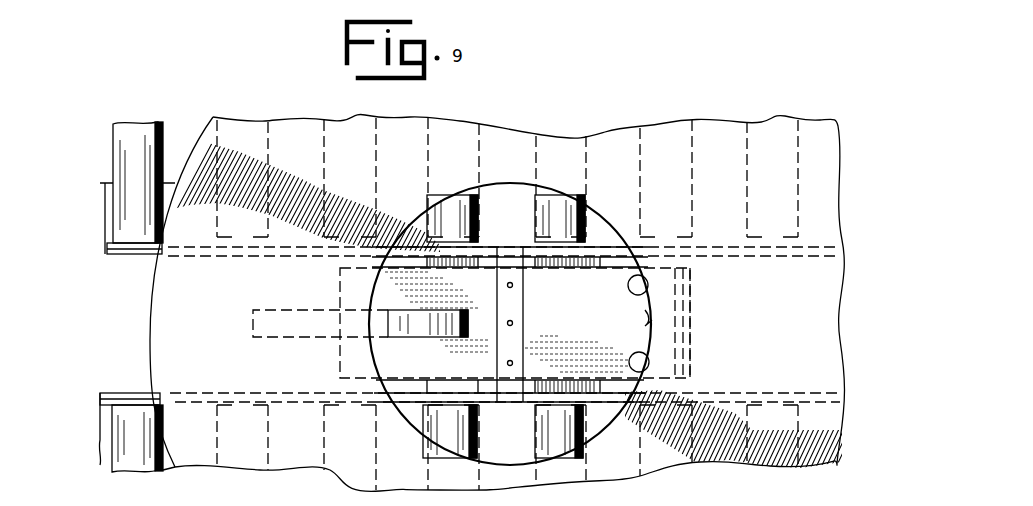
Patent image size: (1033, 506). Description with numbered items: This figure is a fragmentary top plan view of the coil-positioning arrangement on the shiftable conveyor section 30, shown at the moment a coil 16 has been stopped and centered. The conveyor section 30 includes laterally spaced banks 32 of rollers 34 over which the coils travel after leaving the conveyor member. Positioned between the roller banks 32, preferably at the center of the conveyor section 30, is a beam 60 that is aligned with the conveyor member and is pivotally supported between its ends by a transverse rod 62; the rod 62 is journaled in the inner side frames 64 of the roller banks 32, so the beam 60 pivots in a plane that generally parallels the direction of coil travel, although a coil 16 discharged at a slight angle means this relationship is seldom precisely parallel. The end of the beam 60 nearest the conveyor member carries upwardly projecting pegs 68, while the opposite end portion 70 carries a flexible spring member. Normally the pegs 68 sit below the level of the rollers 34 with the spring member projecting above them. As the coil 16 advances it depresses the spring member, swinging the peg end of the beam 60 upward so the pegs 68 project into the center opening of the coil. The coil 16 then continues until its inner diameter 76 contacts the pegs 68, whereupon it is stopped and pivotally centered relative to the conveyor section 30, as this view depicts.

The coil 16 is at (814, 128).
The conveyor section 30 is at (98, 183).
The banks of rollers 32 is at (107, 223).
The rollers 34 is at (143, 132).
The beam 60 is at (677, 311).
The transverse rod 62 is at (514, 395).
The inner side frames 64 is at (603, 250).
The pegs 68 is at (628, 288).
The end portion of beam 70 is at (388, 331).
The inner diameter of coil 76 is at (677, 343).